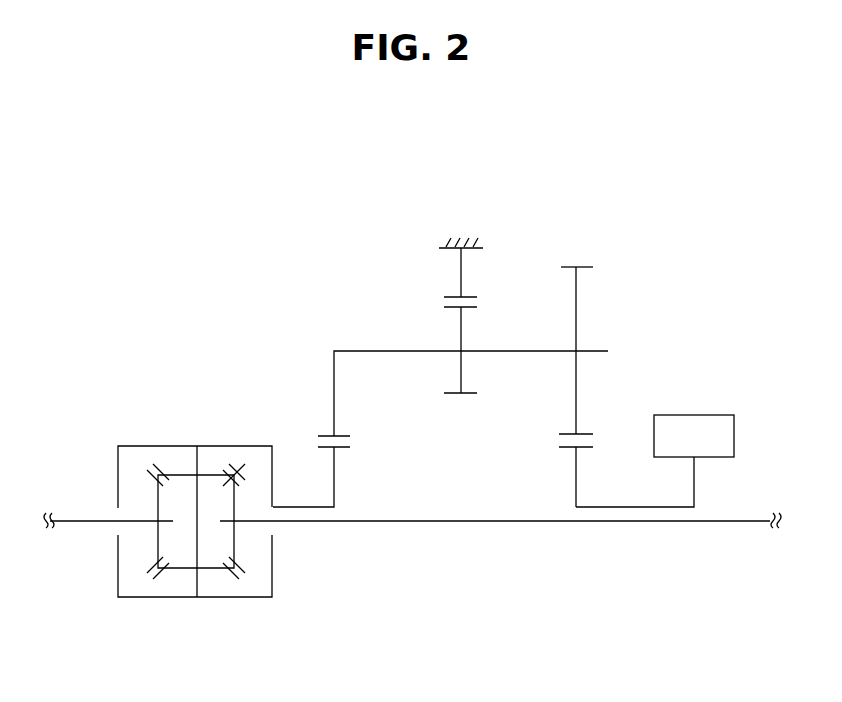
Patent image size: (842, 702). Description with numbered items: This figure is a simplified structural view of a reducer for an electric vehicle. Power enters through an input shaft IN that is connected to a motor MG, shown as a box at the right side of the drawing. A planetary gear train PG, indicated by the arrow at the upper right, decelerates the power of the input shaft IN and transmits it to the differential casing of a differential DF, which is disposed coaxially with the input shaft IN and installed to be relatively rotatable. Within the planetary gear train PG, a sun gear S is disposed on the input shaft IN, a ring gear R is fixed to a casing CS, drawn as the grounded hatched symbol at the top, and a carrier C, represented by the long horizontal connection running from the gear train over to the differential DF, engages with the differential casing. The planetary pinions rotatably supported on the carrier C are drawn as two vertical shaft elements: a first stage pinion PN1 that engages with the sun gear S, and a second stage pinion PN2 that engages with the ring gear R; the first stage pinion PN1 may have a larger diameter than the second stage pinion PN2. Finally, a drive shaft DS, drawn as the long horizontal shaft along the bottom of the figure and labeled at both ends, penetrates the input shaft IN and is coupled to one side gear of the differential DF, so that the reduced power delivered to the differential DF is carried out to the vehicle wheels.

The drive shaft DS is at (82, 520).
The differential DF is at (177, 437).
The carrier C is at (375, 350).
The casing CS is at (460, 247).
The planetary gear train PG is at (596, 309).
The ring gear R is at (452, 295).
The first stage pinion PN1 is at (580, 265).
The second stage pinion PN2 is at (472, 309).
The sun gear S is at (568, 450).
The input shaft IN is at (621, 507).
The motor MG is at (694, 436).